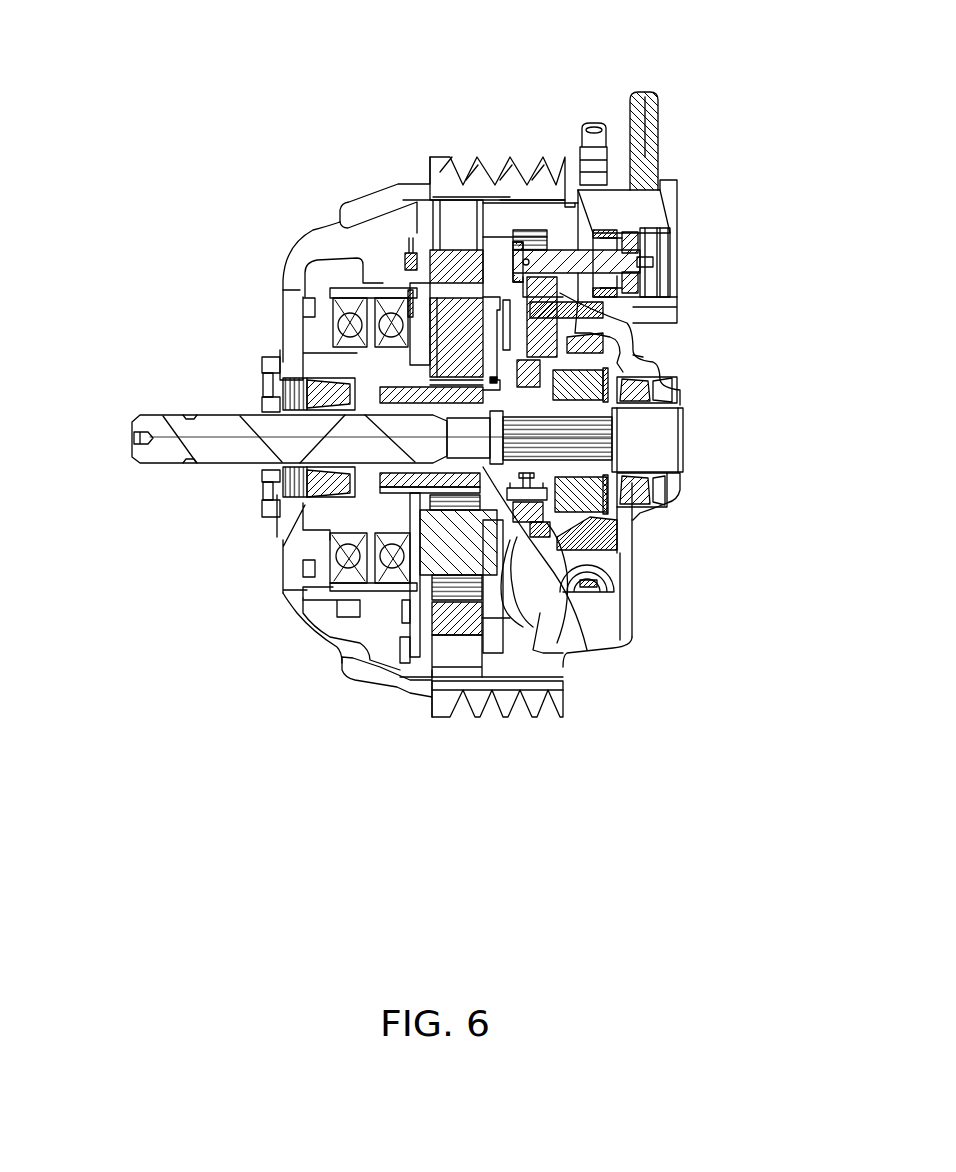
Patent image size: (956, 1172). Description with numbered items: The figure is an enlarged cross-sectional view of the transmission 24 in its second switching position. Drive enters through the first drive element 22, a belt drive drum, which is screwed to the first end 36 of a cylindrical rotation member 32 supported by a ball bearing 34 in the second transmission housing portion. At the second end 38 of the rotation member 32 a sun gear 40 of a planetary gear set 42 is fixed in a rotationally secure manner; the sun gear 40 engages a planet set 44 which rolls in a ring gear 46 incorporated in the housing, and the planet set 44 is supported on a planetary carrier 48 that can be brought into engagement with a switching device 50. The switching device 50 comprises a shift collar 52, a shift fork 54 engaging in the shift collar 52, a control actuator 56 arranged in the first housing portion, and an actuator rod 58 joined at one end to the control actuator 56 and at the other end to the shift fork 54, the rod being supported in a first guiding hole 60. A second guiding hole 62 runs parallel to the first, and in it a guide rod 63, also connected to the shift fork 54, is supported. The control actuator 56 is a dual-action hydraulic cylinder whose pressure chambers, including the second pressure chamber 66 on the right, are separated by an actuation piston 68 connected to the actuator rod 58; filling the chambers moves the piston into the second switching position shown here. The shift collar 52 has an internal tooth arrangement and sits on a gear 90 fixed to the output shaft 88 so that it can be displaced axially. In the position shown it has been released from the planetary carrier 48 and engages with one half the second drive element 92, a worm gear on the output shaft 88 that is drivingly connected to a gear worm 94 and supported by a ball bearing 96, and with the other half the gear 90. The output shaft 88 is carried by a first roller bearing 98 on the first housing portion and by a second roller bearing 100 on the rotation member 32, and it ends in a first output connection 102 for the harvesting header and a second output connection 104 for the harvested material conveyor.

The first drive element 22 is at (478, 178).
The transmission 24 is at (147, 240).
The rotation member 32 is at (300, 572).
The ball bearing 34 is at (373, 445).
The first end 36 is at (280, 345).
The second end 38 is at (365, 590).
The sun gear 40 is at (512, 523).
The planetary gear set 42 is at (403, 313).
The planet set 44 is at (413, 317).
The ring gear 46 is at (415, 253).
The planetary carrier 48 is at (527, 420).
The switching device 50 is at (677, 393).
The shift collar 52 is at (512, 530).
The shift fork 54 is at (550, 248).
The control actuator 56 is at (620, 222).
The actuator rod 58 is at (560, 255).
The first guiding hole 60 is at (678, 302).
The second guiding hole 62 is at (660, 323).
The guide rod 63 is at (643, 357).
The second pressure chamber 66 is at (618, 228).
The actuation piston 68 is at (670, 250).
The output shaft 88 is at (280, 445).
The gear 90 is at (593, 647).
The second drive element 92 is at (600, 548).
The gear worm 94 is at (617, 582).
The ball bearing 96 is at (612, 503).
The first roller bearing 98 is at (637, 512).
The second roller bearing 100 is at (267, 405).
The first output connection 102 is at (132, 437).
The second output connection 104 is at (658, 427).